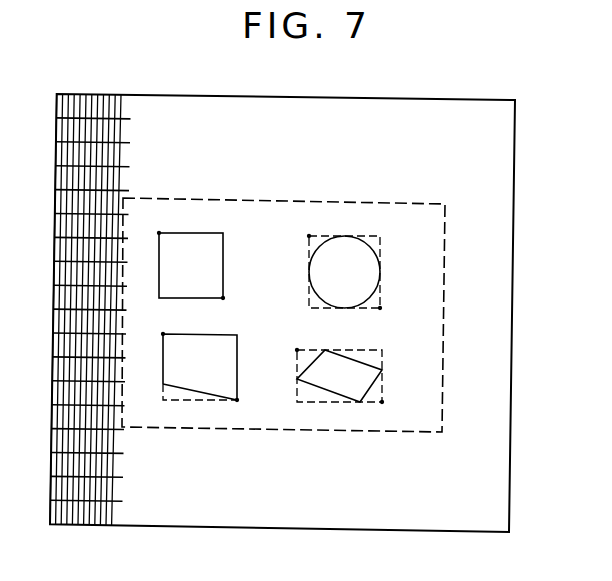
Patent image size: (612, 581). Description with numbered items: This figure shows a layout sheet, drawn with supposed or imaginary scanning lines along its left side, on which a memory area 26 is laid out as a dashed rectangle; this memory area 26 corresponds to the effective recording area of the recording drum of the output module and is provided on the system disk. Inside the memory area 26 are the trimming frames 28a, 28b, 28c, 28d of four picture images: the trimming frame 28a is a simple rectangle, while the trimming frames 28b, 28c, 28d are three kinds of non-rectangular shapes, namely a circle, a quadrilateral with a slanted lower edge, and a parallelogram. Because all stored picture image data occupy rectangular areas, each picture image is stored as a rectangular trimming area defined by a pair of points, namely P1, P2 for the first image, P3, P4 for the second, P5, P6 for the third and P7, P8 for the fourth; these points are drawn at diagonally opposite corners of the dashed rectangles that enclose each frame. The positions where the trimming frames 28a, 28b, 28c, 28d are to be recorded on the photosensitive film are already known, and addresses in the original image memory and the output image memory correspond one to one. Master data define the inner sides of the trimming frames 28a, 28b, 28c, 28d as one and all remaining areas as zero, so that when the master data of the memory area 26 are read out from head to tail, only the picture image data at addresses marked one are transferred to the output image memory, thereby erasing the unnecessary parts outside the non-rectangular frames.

The memory area 26 is at (365, 202).
The trimming frame 28a is at (224, 265).
The trimming frame 28b is at (380, 267).
The trimming frame 28c is at (238, 350).
The trimming frame 28d is at (382, 370).
The corner point of rectangular trimming area P1 is at (154, 220).
The corner point of rectangular trimming area P2 is at (243, 300).
The corner point of rectangular trimming area P3 is at (299, 224).
The corner point of rectangular trimming area P4 is at (400, 312).
The corner point of rectangular trimming area P5 is at (153, 322).
The corner point of rectangular trimming area P6 is at (254, 412).
The corner point of rectangular trimming area P7 is at (298, 337).
The corner point of rectangular trimming area P8 is at (399, 408).